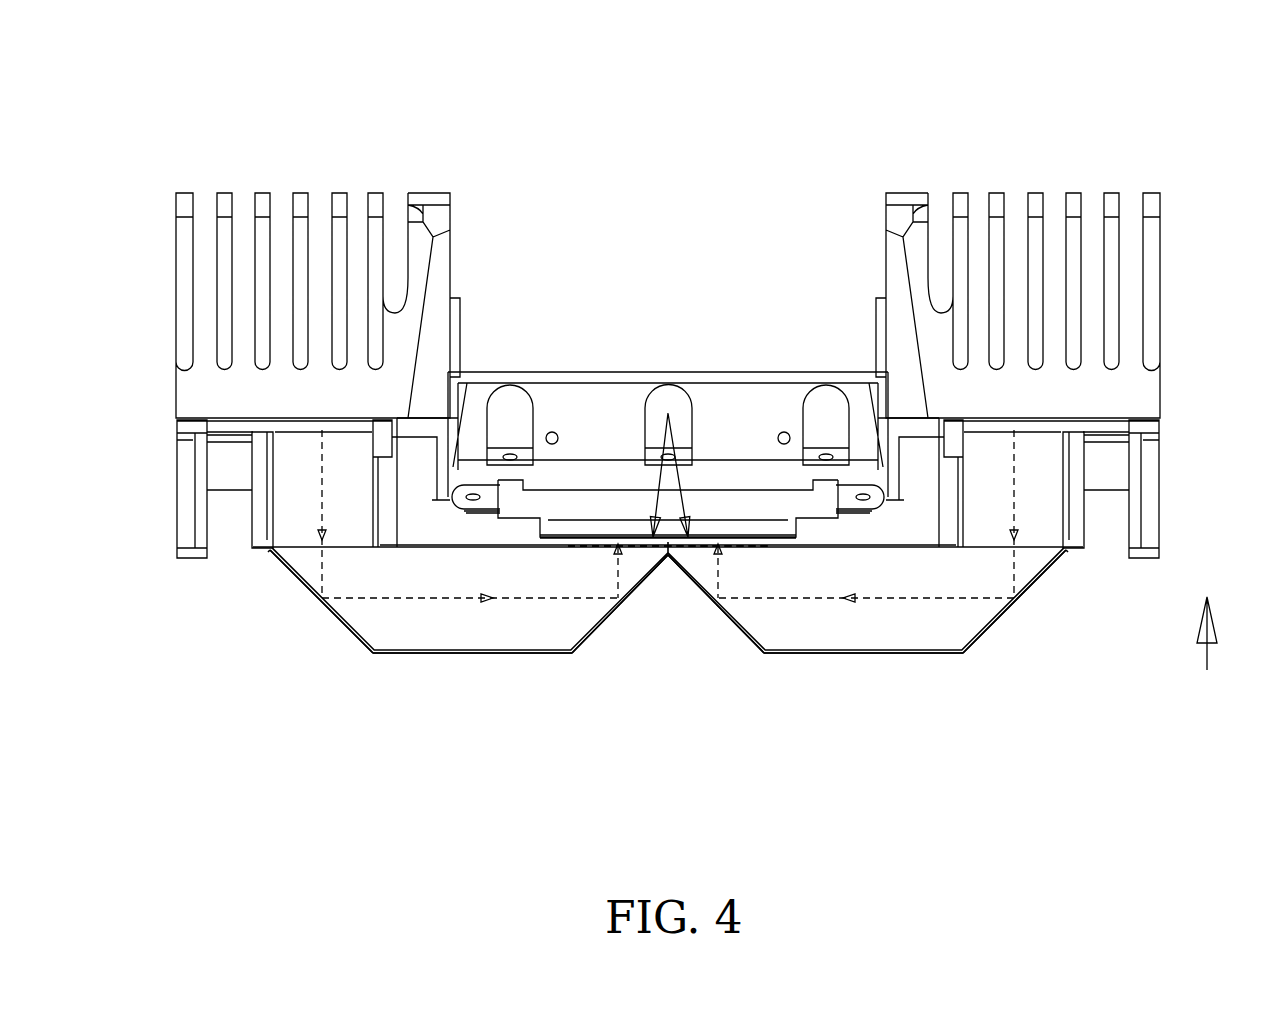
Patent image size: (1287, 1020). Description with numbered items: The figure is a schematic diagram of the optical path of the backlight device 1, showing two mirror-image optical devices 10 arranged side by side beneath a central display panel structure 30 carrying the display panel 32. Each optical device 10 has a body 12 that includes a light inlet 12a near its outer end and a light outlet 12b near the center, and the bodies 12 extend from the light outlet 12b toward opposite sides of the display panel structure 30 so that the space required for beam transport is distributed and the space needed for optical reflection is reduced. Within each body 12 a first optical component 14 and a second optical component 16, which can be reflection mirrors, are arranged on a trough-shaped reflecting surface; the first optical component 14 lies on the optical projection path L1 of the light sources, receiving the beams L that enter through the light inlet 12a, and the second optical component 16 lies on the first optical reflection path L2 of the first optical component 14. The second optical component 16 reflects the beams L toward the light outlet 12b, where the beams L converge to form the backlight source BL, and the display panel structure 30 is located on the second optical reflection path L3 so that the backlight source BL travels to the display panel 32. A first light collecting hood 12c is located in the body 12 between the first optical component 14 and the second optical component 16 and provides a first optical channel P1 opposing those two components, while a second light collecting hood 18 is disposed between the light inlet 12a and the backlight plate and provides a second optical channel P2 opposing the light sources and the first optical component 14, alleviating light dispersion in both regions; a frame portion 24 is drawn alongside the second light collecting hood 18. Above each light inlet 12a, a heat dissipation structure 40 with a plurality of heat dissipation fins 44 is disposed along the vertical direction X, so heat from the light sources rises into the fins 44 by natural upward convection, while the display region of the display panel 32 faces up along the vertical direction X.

The backlight device 1 is at (1275, 50).
The optical device 10 is at (642, 568).
The body 12 is at (478, 657).
The light inlet 12a is at (287, 556).
The light outlet 12b is at (592, 540).
The first light collecting hood 12c is at (432, 652).
The first optical component 14 is at (350, 637).
The second optical component 16 is at (697, 588).
The second light collecting hood 18 is at (270, 537).
The mounting frame 24 is at (373, 418).
The display panel structure 30 is at (592, 453).
The display panel 32 is at (717, 527).
The heat dissipation structure 40 is at (145, 110).
The heat dissipation fins 44 is at (223, 193).
The beams L is at (323, 470).
The optical projection path L1 is at (315, 592).
The first optical reflection path L2 is at (571, 602).
The second optical reflection path L3 is at (668, 413).
The first optical channel P1 is at (452, 557).
The second optical channel P2 is at (280, 488).
The backlight source BL is at (773, 547).
The vertical direction X is at (1219, 633).